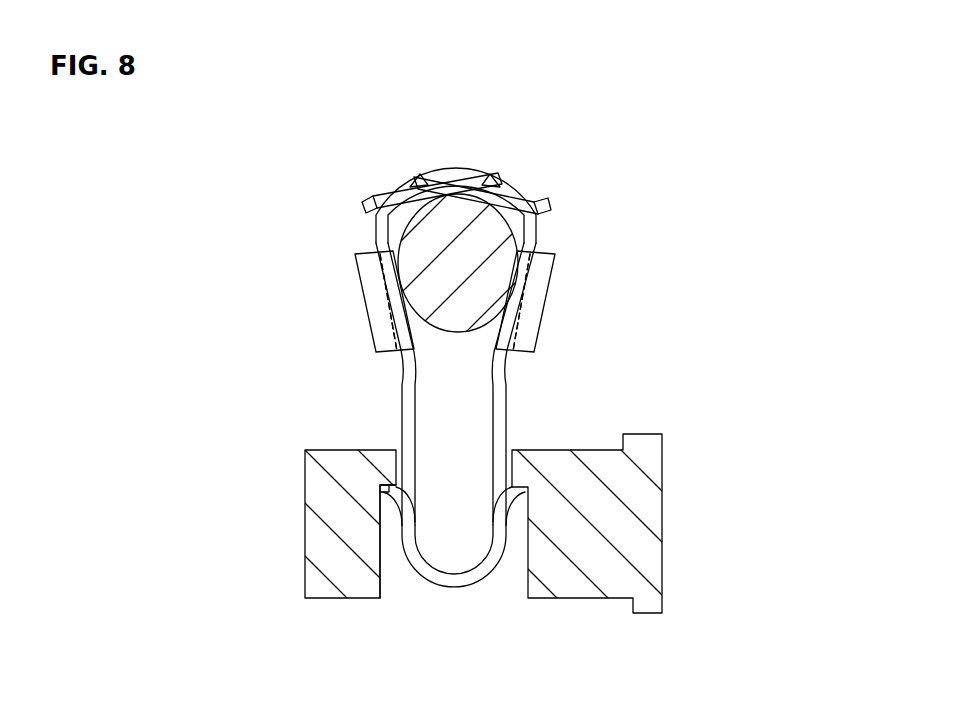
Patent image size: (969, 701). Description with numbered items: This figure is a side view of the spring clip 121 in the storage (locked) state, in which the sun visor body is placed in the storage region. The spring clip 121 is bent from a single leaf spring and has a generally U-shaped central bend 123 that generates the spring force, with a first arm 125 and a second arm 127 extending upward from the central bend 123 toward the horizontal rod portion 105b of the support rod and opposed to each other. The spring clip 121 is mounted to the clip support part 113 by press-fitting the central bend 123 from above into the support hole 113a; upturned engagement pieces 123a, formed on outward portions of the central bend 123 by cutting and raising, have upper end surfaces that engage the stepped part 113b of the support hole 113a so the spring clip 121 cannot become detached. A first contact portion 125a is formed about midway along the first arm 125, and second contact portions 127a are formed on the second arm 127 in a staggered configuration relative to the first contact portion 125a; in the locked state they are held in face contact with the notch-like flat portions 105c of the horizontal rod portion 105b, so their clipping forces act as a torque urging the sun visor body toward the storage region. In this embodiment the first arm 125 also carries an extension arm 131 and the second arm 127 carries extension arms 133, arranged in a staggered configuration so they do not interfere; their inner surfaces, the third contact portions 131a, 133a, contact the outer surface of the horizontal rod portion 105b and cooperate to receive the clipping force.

The horizontal rod portion 105b is at (408, 247).
The flat portions 105c is at (393, 266).
The clip support part 113 is at (308, 513).
The support hole 113a is at (398, 581).
The stepped part 113b is at (382, 488).
The spring clip 121 is at (510, 172).
The central bend 123 is at (440, 585).
The engagement pieces 123a is at (527, 488).
The first arm 125 is at (401, 400).
The first contact portion 125a is at (393, 315).
The second arm 127 is at (507, 400).
The second contact portions 127a is at (522, 294).
The extension arm 131 is at (394, 176).
The third contact portion 131a is at (440, 172).
The extension arms 133 is at (522, 190).
The third contact portions 133a is at (450, 175).